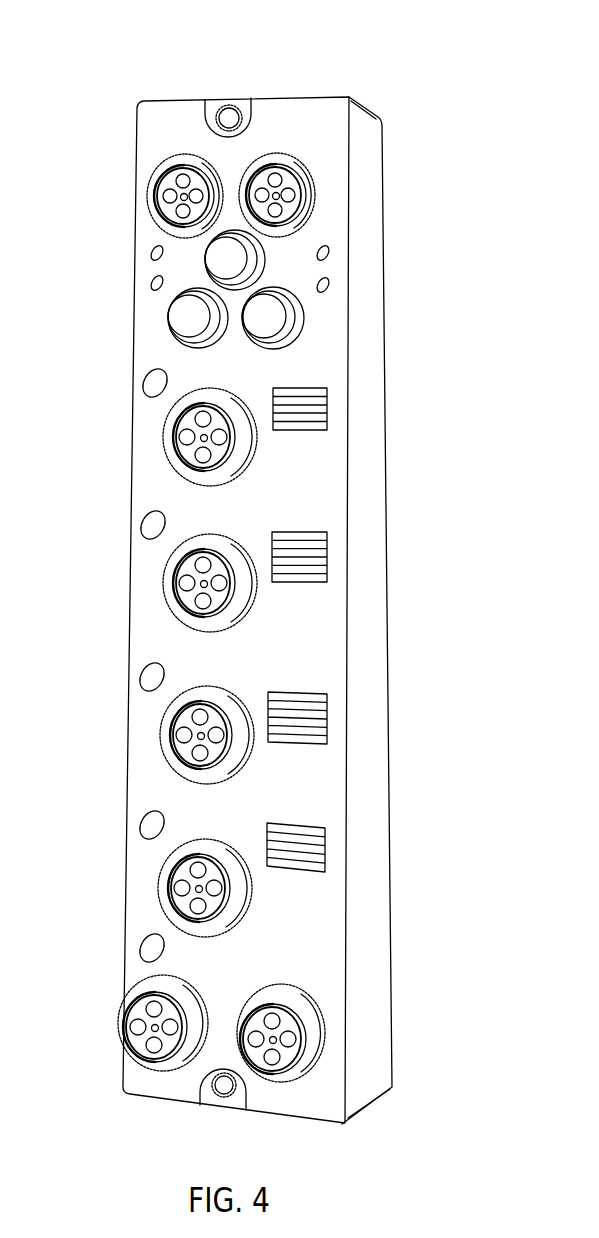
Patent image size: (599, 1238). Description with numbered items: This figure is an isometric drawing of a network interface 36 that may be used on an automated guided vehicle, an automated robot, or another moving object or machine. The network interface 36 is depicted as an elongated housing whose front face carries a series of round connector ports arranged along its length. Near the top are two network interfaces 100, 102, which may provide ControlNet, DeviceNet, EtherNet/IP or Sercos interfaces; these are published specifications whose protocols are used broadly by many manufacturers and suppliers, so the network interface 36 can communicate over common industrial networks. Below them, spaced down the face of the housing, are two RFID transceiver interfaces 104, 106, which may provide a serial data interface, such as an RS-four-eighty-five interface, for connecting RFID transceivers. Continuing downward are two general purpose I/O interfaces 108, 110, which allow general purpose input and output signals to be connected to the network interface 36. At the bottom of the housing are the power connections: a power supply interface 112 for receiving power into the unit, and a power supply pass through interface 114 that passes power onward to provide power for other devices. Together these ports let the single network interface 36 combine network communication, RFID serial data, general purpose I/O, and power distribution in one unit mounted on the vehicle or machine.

The network interface 36 is at (349, 96).
The network interface 100 is at (150, 200).
The network interface 102 is at (315, 200).
The RFID transceiver interface 104 is at (160, 442).
The RFID transceiver interface 106 is at (162, 580).
The general purpose I/O interface 108 is at (162, 742).
The general purpose I/O interface 110 is at (156, 890).
The power supply interface 112 is at (124, 1030).
The power supply pass through interface 114 is at (322, 1045).